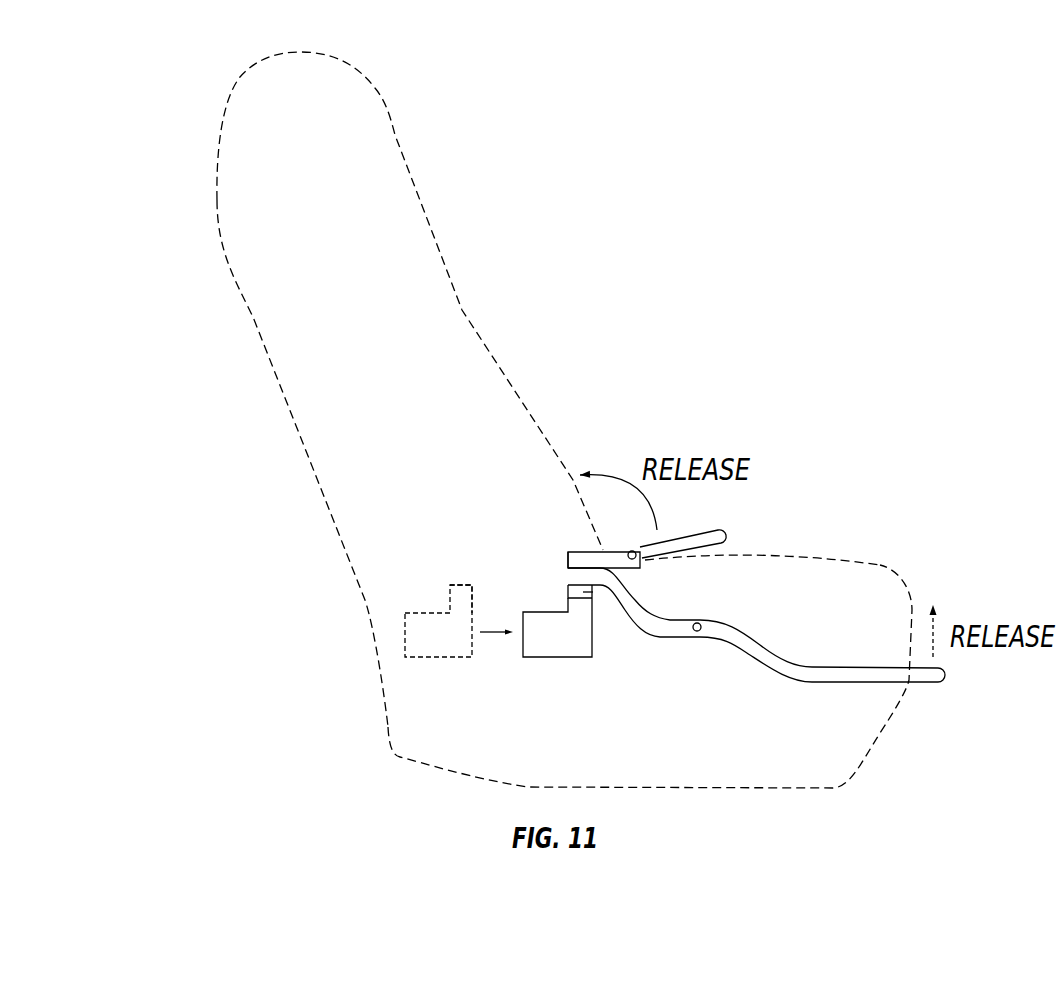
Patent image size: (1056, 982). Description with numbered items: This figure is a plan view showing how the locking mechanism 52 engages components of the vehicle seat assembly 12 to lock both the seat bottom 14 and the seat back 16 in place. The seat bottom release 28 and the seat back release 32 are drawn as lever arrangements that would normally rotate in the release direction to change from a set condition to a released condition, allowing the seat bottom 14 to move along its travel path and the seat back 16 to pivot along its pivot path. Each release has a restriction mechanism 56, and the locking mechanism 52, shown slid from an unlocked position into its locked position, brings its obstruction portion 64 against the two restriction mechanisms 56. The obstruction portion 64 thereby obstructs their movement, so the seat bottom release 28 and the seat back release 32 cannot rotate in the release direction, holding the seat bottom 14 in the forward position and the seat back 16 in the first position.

The vehicle seat assembly 12 is at (544, 411).
The seat back 16 is at (200, 73).
The seat bottom 14 is at (882, 565).
The seat back release 32 is at (723, 537).
The seat bottom release 28 is at (943, 673).
The restriction mechanism 56 is at (570, 577).
The obstruction portion 64 is at (593, 592).
The locking mechanism 52 is at (442, 658).